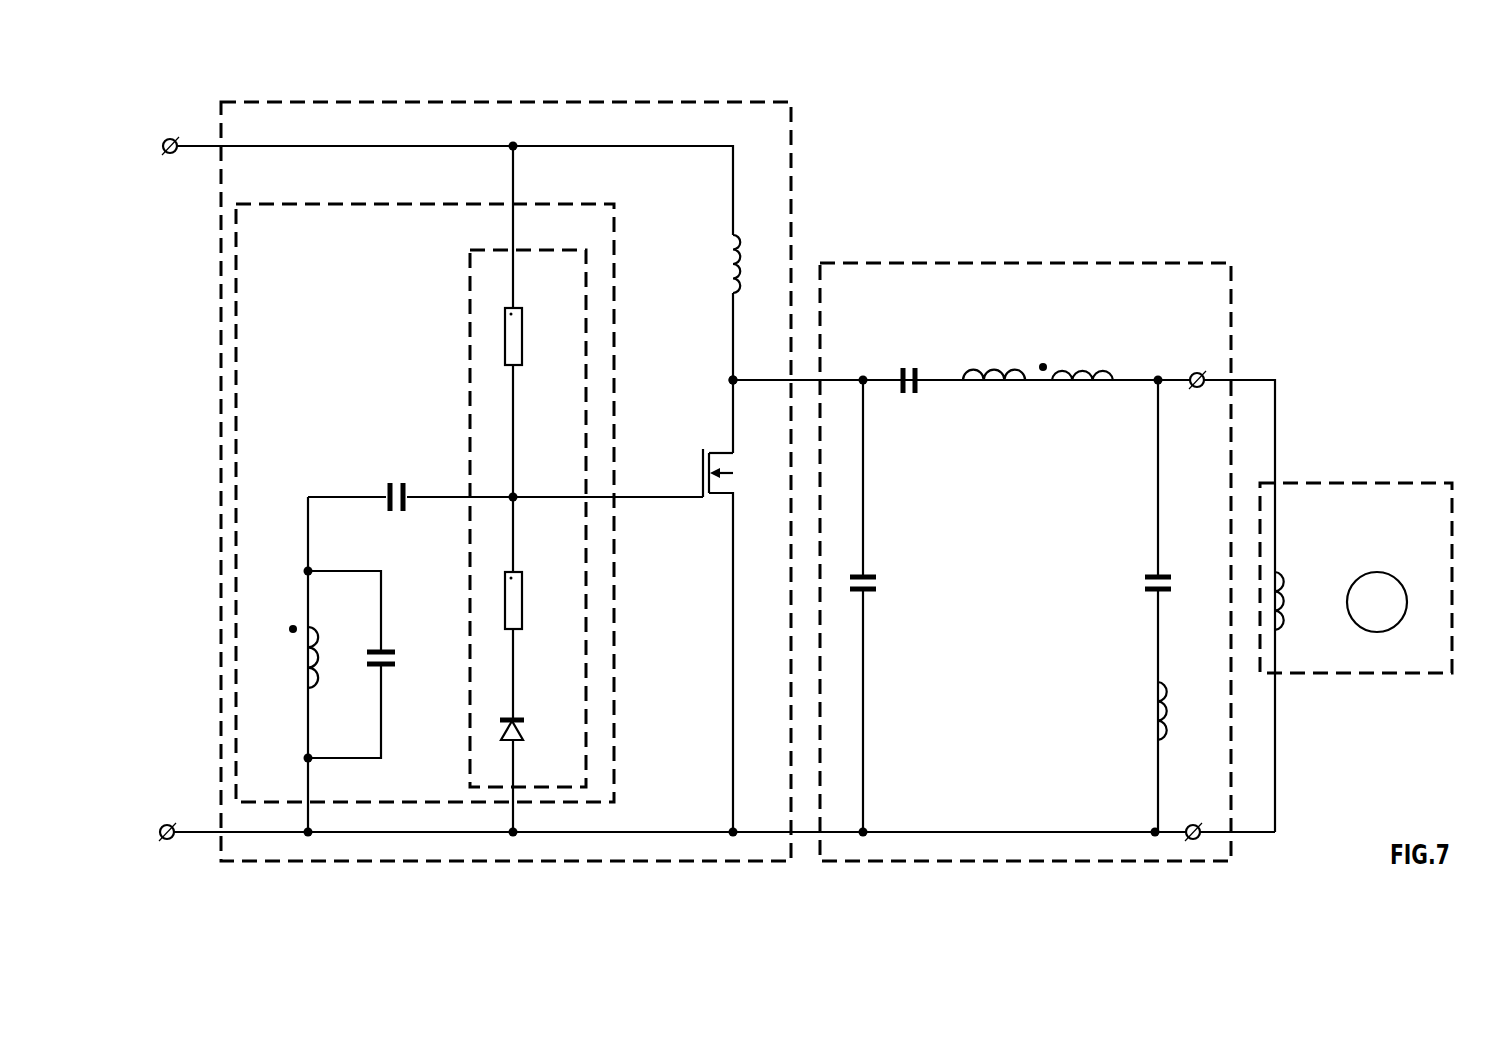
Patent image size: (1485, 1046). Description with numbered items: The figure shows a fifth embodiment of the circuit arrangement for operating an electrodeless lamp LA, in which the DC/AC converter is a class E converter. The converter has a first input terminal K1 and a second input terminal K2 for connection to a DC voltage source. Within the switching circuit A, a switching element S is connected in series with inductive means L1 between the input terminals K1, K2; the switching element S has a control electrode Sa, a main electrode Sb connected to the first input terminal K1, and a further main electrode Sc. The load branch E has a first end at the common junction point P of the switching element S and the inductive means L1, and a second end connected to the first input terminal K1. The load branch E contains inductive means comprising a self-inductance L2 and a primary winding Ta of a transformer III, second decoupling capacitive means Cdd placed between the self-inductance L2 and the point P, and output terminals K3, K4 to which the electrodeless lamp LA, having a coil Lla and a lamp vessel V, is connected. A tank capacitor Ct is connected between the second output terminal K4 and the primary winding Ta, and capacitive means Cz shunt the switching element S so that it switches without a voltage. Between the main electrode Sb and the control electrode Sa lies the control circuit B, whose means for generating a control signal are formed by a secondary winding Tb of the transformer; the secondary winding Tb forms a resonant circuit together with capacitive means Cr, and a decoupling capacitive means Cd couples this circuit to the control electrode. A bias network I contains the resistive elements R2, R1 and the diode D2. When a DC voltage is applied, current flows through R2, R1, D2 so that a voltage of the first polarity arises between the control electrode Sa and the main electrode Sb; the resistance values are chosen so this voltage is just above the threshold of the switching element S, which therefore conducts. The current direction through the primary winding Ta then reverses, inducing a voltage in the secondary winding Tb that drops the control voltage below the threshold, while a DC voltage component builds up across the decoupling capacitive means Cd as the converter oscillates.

The switching circuit A is at (793, 196).
The control circuit B is at (235, 362).
The gate bias network I is at (470, 296).
The load branch E is at (1088, 262).
The electrodeless lamp LA is at (1355, 482).
The first input terminal K1 is at (165, 822).
The second input terminal K2 is at (167, 158).
The first output terminal K3 is at (1192, 824).
The second output terminal K4 is at (1196, 372).
The inductive means L1 is at (735, 240).
The common junction point P is at (731, 377).
The switching element S is at (708, 635).
The control electrode Sa is at (670, 469).
The main electrode Sb is at (733, 549).
The further main electrode Sc is at (734, 445).
The resistive element R1 is at (523, 598).
The resistive element R2 is at (525, 330).
The diode D2 is at (524, 733).
The decoupling capacitive means Cd is at (395, 482).
The secondary winding Tb is at (308, 664).
The capacitive means Cr is at (397, 658).
The capacitive means Cz is at (878, 585).
The second decoupling capacitive means Cdd is at (908, 367).
The self-inductance L2 is at (987, 393).
The primary winding Ta is at (1120, 710).
The transformer III is at (1090, 393).
The tank capacitor Ct is at (1144, 588).
The coil Lla is at (1285, 578).
The lamp vessel V is at (1380, 580).